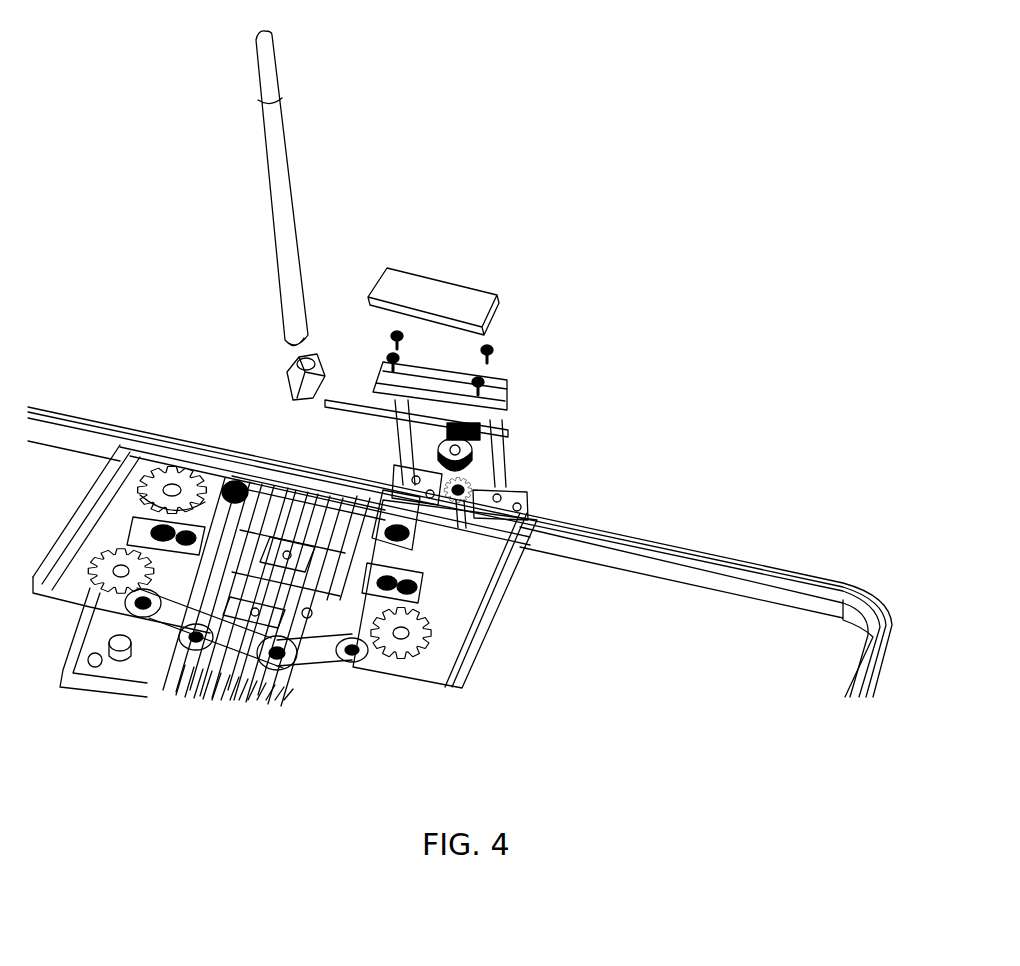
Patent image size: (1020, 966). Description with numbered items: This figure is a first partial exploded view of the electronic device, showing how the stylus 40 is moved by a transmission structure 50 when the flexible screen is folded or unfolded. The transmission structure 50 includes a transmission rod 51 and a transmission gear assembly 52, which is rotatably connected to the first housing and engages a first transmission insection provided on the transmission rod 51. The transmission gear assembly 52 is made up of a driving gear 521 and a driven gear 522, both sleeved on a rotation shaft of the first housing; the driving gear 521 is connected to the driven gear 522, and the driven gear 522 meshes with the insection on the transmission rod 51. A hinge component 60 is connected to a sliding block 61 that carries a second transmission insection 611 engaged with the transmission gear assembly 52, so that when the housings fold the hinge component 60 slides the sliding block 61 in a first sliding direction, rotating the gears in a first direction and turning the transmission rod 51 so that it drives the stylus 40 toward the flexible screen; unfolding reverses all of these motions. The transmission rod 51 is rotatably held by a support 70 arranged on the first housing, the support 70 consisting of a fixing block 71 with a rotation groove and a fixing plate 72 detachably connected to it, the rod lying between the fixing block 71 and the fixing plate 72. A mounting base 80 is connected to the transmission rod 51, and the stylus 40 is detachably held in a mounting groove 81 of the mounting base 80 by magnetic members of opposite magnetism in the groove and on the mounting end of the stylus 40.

The stylus 40 is at (283, 208).
The transmission structure 50 is at (797, 352).
The transmission rod 51 is at (503, 445).
The transmission gear assembly 52 is at (765, 428).
The driving gear 521 is at (465, 490).
The driven gear 522 is at (473, 453).
The hinge component 60 is at (530, 630).
The sliding block 61 is at (437, 553).
The second transmission insection 611 is at (467, 537).
The support 70 is at (312, 200).
The fixing block 71 is at (398, 493).
The fixing plate 72 is at (418, 358).
The mounting base 80 is at (202, 323).
The mounting groove 81 is at (304, 365).